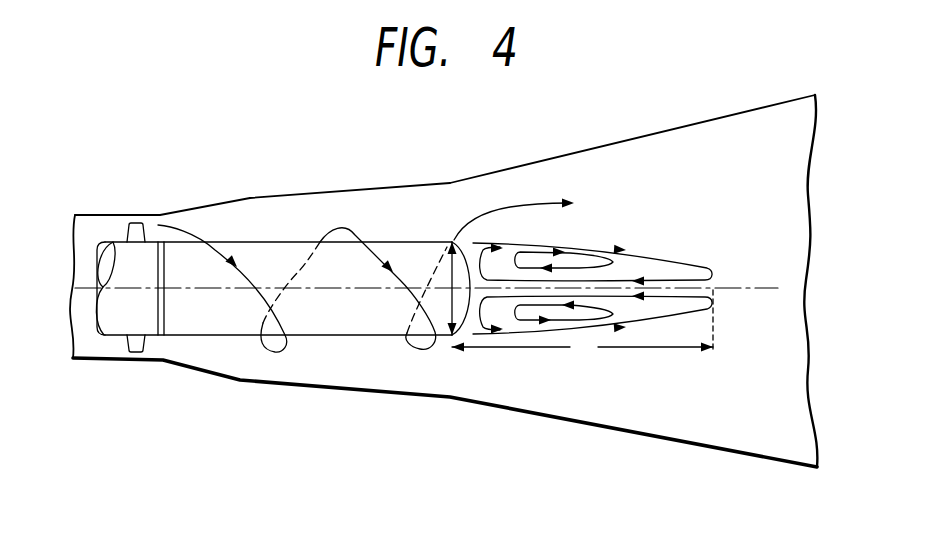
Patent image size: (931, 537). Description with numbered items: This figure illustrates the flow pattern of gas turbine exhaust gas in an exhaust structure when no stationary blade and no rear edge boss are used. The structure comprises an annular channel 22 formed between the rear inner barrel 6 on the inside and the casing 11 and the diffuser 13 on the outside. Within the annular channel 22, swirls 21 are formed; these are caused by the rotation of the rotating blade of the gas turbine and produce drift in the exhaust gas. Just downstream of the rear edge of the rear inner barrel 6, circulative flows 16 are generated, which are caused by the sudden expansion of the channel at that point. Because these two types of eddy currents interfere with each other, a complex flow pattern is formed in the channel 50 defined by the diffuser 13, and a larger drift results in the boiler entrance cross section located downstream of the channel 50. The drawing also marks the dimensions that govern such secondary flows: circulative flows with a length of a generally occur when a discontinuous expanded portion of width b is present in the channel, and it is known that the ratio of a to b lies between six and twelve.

The rear inner barrel 6 is at (402, 242).
The casing 11 is at (367, 190).
The diffuser 13 is at (647, 135).
The circulative flows 16 is at (647, 252).
The swirls 21 is at (182, 229).
The annular channel 22 is at (322, 200).
The channel 50 is at (722, 403).
The length of circulative flows a is at (582, 324).
The discontinuous expanded portion width b is at (449, 302).